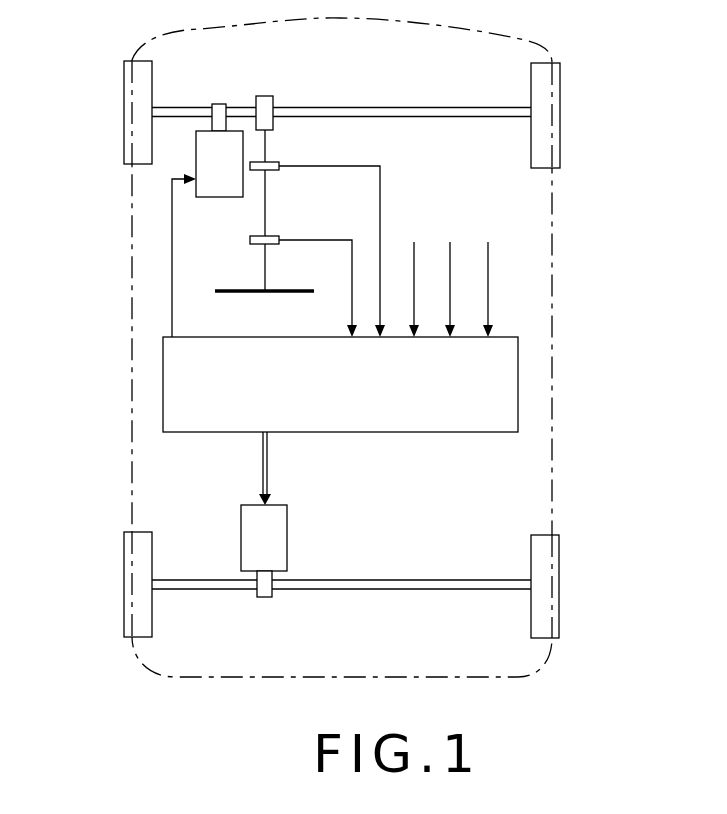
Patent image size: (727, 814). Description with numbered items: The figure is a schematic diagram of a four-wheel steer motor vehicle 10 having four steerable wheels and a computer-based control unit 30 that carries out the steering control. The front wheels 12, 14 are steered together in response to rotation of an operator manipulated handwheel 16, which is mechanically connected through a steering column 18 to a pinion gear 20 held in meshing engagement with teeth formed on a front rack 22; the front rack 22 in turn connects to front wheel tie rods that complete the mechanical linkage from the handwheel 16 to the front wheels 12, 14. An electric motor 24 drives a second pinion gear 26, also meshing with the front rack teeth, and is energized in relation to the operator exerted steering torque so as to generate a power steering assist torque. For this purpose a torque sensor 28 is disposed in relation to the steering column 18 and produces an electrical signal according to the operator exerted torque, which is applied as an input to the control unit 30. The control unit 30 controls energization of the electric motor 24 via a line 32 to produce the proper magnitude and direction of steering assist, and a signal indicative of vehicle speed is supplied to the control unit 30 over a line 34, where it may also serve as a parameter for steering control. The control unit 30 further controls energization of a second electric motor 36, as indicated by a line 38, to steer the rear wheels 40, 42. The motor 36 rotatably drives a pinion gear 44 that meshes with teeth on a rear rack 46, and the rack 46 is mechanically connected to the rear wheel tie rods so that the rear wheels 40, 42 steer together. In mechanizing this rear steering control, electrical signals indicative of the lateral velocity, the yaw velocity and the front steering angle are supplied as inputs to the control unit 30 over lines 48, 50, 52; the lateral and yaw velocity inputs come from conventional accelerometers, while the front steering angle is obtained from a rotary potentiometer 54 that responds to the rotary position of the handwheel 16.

The motor vehicle 10 is at (98, 400).
The front wheel 12 is at (125, 121).
The front wheel 14 is at (560, 115).
The handwheel 16 is at (233, 289).
The steering column 18 is at (267, 192).
The pinion gear 20 is at (264, 108).
The front rack 22 is at (366, 109).
The electric motor 24 is at (202, 156).
The second pinion gear 26 is at (218, 106).
The torque sensor 28 is at (268, 166).
The control unit 30 is at (407, 423).
The line 32 is at (172, 262).
The line 34 is at (414, 268).
The electric motor 36 is at (287, 548).
The line 38 is at (267, 448).
The rear wheel 40 is at (132, 597).
The rear wheel 42 is at (551, 585).
The pinion gear 44 is at (264, 596).
The rear rack 46 is at (406, 586).
The line 48 is at (450, 285).
The line 50 is at (488, 288).
The line 52 is at (350, 291).
The rotary potentiometer 54 is at (268, 240).